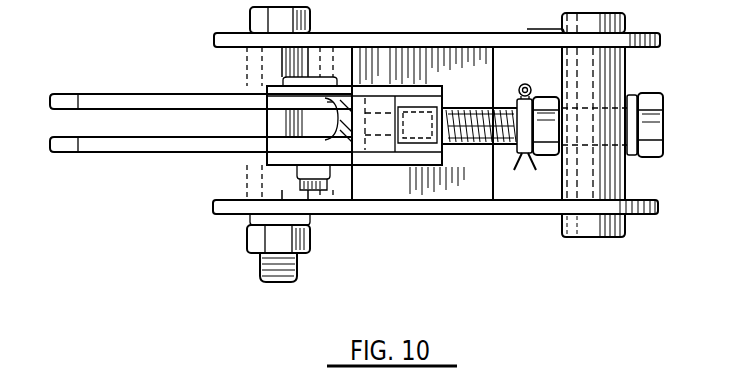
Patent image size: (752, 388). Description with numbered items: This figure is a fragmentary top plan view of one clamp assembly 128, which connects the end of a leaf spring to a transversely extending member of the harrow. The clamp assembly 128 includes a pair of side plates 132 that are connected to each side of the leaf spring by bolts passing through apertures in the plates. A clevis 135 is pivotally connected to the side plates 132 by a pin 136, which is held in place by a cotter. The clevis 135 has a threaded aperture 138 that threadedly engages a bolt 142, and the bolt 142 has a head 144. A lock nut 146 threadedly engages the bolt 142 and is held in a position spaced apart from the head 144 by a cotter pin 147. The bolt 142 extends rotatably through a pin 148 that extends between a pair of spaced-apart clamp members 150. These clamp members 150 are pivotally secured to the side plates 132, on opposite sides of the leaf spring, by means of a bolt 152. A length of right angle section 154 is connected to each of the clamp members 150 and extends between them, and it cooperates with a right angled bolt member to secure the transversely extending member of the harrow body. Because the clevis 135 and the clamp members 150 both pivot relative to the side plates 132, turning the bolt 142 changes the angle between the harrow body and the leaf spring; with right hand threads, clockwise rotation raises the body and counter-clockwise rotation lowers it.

The clamp assembly 128 is at (145, 247).
The side plates 132 is at (68, 97).
The clevis 135 is at (408, 164).
The pin 136 is at (326, 178).
The threaded aperture 138 is at (444, 108).
The bolt 142 is at (488, 144).
The head 144 is at (652, 128).
The lock nut 146 is at (549, 152).
The cotter pin 147 is at (522, 84).
The pin 148 is at (596, 180).
The clamp members 150 is at (648, 53).
The bolt 152 is at (262, 266).
The right angle section 154 is at (382, 62).